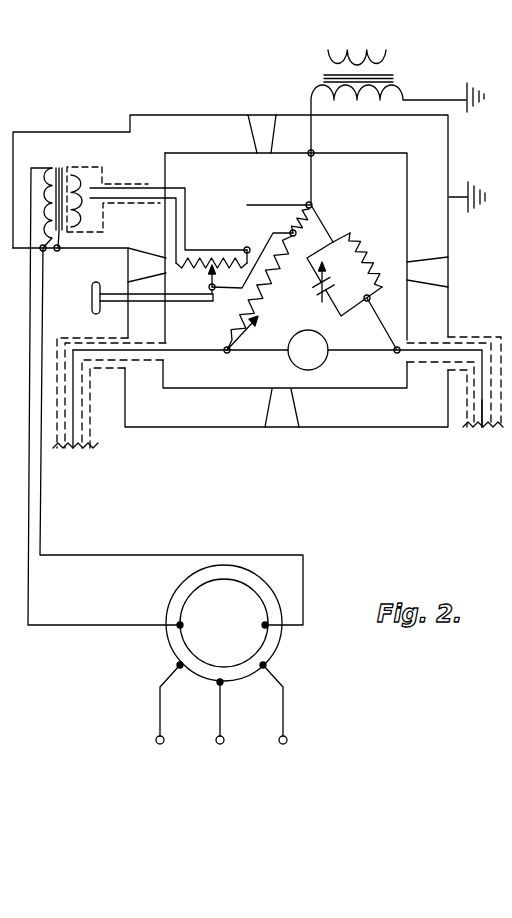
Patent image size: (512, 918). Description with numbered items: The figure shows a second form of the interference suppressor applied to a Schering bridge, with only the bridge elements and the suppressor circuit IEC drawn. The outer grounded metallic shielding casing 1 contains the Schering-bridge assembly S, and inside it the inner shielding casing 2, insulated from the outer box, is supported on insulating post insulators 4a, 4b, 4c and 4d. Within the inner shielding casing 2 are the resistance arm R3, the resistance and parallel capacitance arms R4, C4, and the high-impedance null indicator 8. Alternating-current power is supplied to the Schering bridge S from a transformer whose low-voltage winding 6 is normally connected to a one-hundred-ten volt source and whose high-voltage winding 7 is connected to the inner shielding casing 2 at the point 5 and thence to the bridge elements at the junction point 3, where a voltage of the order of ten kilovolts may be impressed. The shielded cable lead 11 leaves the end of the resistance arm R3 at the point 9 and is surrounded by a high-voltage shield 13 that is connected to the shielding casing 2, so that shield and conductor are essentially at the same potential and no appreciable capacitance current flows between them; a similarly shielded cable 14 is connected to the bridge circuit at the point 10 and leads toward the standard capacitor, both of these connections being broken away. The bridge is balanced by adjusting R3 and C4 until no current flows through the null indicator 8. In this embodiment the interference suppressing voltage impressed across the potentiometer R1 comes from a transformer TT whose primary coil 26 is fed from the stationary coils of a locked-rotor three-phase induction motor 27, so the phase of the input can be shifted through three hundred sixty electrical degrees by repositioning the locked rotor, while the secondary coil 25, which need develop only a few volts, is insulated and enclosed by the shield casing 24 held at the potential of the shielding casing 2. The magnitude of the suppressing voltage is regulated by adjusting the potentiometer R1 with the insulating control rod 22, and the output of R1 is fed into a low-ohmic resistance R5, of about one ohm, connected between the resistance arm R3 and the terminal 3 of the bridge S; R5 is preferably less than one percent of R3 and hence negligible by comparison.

The outer grounded metallic shielding casing 1 is at (453, 167).
The inner shielding casing 2 is at (408, 202).
The junction point 3 is at (312, 202).
The insulating post insulator 4a is at (249, 136).
The insulating post insulator 4b is at (128, 275).
The insulating post insulator 4c is at (270, 431).
The insulating post insulator 4d is at (451, 270).
The connection point 5 is at (314, 150).
The low-voltage winding 6 is at (386, 58).
The high-voltage winding 7 is at (405, 92).
The high-impedance null indicator 8 is at (299, 350).
The connection point 9 is at (225, 352).
The connection point 10 is at (395, 352).
The shielded cable lead 11 is at (75, 400).
The high-voltage shield 13 is at (80, 427).
The shielded cable 14 is at (480, 410).
The insulating control rod 22 is at (120, 298).
The shield casing 24 is at (105, 183).
The secondary coil 25 is at (85, 173).
The primary coil 26 is at (52, 170).
The locked-rotor three-phase induction motor 27 is at (321, 674).
The potentiometer R1 is at (211, 260).
The resistance arm R3 is at (262, 290).
The resistance arm R4 is at (375, 243).
The resistance R5 is at (288, 227).
The parallel capacitance arm C4 is at (311, 283).
The Schering-bridge assembly S is at (376, 219).
The transformer TT is at (120, 220).
The suppressor circuit IEC is at (157, 212).